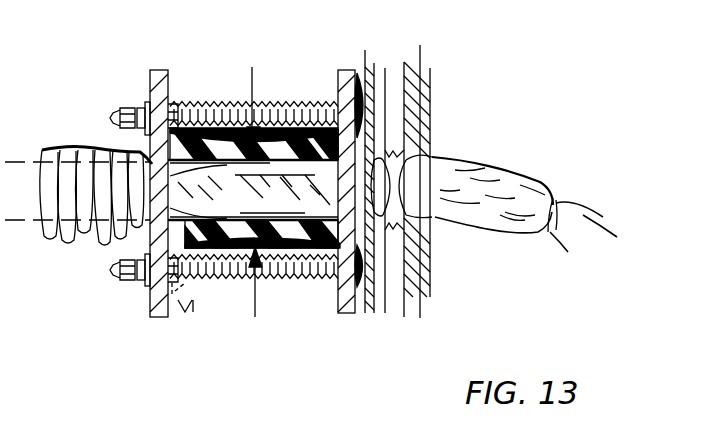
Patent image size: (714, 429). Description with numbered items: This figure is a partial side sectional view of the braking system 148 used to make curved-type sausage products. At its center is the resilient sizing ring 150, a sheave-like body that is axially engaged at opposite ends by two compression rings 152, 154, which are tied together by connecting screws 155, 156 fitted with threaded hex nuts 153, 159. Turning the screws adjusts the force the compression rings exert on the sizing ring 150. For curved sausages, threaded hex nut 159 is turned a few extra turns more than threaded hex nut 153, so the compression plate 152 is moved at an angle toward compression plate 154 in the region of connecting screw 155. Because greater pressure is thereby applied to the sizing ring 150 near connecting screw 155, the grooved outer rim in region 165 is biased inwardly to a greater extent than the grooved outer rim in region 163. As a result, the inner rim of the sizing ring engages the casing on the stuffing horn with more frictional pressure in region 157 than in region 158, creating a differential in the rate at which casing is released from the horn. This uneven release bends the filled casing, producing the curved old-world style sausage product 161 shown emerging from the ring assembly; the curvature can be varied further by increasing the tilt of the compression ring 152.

The light guide coupling assembly 148 is at (276, 62).
The resilient sizing ring 150 is at (355, 122).
The compression ring 152 is at (187, 313).
The threaded hex nut 153 is at (137, 110).
The compression ring 154 is at (348, 315).
The connecting screw 155 is at (305, 280).
The connecting screw 156 is at (220, 103).
The inner rim region 157 is at (170, 215).
The inner rim region 158 is at (150, 165).
The threaded hex nut 159 is at (140, 284).
The curved sausage product 161 is at (502, 188).
The grooved outer rim region 163 is at (290, 138).
The grooved outer rim region 165 is at (350, 275).